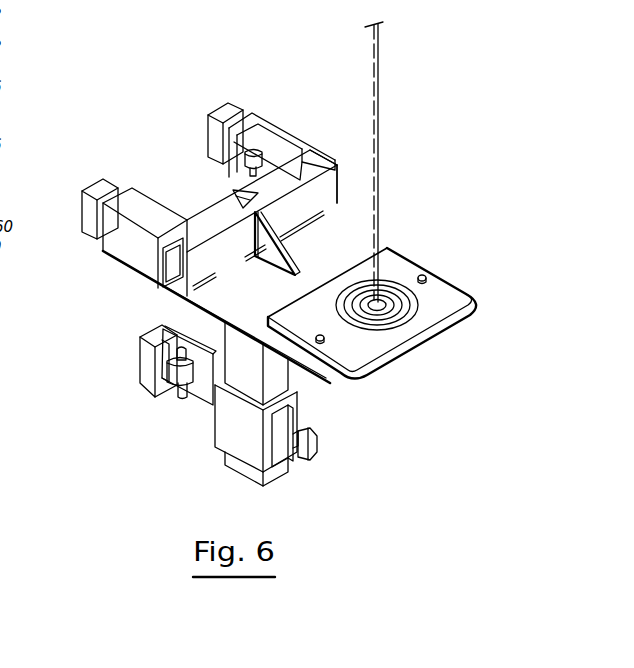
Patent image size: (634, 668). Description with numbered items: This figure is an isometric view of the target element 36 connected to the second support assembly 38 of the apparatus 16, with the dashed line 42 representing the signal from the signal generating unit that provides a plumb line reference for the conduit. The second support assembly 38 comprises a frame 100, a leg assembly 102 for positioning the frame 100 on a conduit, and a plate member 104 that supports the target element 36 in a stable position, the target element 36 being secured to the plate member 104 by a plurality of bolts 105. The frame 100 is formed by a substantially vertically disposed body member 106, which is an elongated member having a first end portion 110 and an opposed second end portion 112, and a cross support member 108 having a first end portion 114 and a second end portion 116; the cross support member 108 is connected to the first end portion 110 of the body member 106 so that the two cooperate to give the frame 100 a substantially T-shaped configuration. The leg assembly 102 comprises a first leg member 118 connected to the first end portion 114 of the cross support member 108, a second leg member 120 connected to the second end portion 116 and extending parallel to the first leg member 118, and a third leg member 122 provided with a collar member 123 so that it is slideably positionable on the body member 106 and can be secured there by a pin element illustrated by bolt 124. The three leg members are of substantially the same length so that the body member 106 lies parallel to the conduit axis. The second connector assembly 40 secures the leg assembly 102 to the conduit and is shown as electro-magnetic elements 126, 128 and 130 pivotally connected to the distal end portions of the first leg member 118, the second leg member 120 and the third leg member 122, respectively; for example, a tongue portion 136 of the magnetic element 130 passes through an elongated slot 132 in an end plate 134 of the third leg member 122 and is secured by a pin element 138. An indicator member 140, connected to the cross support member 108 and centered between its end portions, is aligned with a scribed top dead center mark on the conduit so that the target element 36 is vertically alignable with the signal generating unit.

The apparatus 16 is at (407, 183).
The target element 36 is at (398, 283).
The second support assembly 38 is at (312, 138).
The second connector assembly 40 is at (93, 174).
The dashed line 42 is at (380, 78).
The frame 100 is at (222, 338).
The leg assembly 102 is at (219, 173).
The plate member 104 is at (392, 242).
The bolts 105 is at (428, 273).
The body member 106 is at (258, 368).
The cross support member 108 is at (298, 203).
The first end portion 110 is at (203, 410).
The second end portion 112 is at (250, 463).
The first end portion 114 is at (158, 238).
The second end portion 116 is at (315, 160).
The first leg member 118 is at (157, 213).
The second leg member 120 is at (272, 124).
The third leg member 122 is at (190, 415).
The collar member 123 is at (230, 432).
The bolt 124 is at (320, 446).
The electro-magnetic element 126 is at (84, 212).
The electro-magnetic element 128 is at (234, 110).
The electro-magnetic element 130 is at (156, 334).
The elongated slot 132 is at (160, 380).
The end plate 134 is at (140, 360).
The tongue portion 136 is at (175, 383).
The pin element 138 is at (160, 325).
The indicator member 140 is at (238, 203).